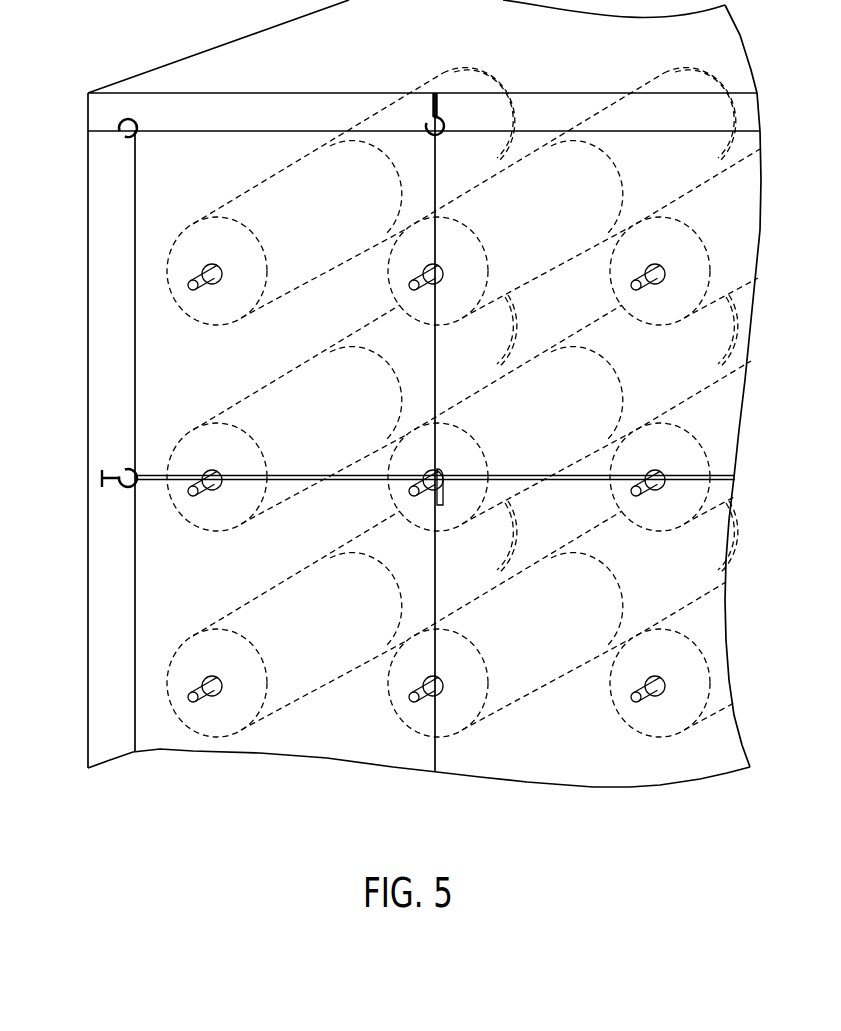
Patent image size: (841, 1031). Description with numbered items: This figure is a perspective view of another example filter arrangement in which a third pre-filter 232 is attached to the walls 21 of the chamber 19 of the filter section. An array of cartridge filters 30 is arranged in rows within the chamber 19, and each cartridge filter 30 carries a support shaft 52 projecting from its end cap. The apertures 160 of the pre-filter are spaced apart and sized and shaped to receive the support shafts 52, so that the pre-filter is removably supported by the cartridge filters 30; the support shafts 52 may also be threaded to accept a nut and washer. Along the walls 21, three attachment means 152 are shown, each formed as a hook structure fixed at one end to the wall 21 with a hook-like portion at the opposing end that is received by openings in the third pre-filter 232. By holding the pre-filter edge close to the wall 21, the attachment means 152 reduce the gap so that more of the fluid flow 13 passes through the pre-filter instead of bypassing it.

The fluid flow 13 is at (176, 782).
The chamber 19 is at (73, 479).
The wall 21 is at (317, 96).
The cartridge filter 30 is at (538, 688).
The support shaft 52 is at (650, 290).
The attachment means 152 is at (112, 133).
The aperture 160 is at (672, 268).
The third pre-filter 232 is at (135, 645).